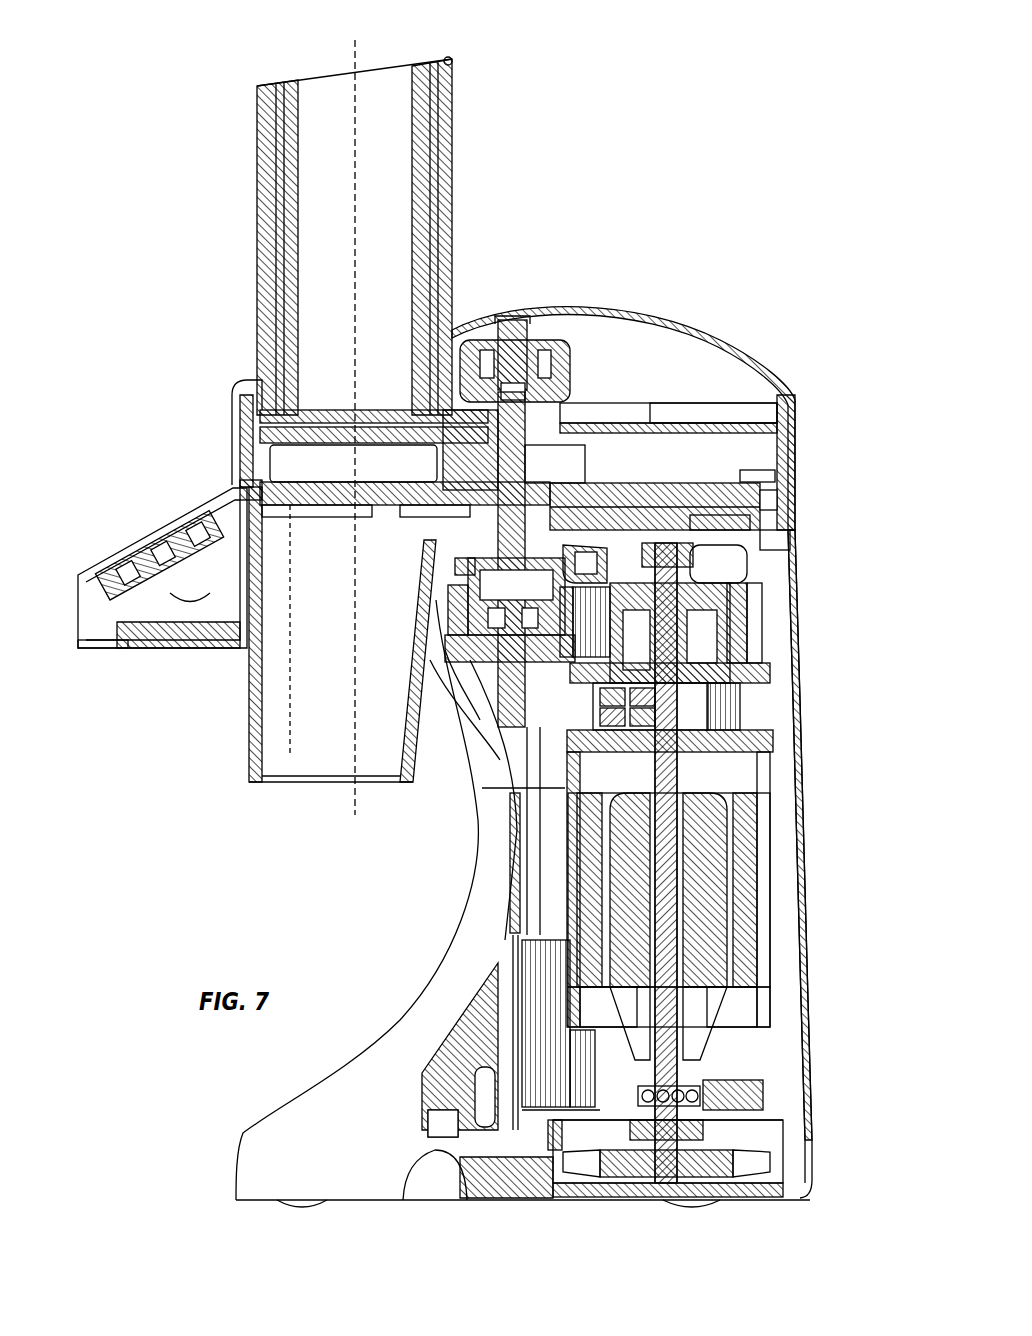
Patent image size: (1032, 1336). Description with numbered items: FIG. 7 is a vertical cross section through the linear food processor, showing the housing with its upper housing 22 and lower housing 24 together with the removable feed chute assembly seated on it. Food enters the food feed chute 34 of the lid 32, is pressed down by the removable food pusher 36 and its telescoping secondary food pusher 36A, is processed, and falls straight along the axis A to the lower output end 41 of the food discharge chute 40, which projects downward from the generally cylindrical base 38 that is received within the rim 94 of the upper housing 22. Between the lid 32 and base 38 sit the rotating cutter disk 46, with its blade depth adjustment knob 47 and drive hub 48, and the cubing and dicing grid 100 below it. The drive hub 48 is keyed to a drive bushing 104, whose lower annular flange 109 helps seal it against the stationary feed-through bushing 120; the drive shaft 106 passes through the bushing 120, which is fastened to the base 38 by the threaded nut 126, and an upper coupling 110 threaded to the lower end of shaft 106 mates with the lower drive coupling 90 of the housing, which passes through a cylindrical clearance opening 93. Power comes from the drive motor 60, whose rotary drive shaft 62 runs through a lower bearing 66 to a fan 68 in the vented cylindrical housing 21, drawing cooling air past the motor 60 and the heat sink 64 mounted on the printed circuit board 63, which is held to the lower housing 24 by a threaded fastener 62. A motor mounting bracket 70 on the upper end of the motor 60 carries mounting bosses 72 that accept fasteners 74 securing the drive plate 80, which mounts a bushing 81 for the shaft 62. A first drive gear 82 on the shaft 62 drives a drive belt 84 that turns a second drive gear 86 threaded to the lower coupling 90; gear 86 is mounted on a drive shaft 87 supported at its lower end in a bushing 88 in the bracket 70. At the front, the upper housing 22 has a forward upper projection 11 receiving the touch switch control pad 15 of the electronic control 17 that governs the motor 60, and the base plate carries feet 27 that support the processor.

The axis A is at (358, 52).
The forward upper projection 11 is at (95, 585).
The touch switch control pad 15 is at (135, 560).
The electronic control 17 is at (100, 645).
The vented cylindrical housing 21 is at (765, 1140).
The upper housing 22 is at (802, 648).
The lower housing 24 is at (812, 935).
The feet 27 is at (305, 1208).
The lid 32 is at (655, 340).
The food feed chute 34 is at (452, 216).
The removable food pusher 36 is at (449, 59).
The telescoping secondary food pusher 36A is at (297, 110).
The base 38 is at (240, 470).
The food discharge chute 40 is at (248, 690).
The lower output end 41 is at (270, 782).
The cutter disk 46 is at (640, 403).
The blade depth adjustment knob 47 is at (568, 375).
The drive hub 48 is at (530, 336).
The drive motor 60 is at (715, 900).
The drive shaft 62 is at (760, 795).
The printed circuit board 63 is at (500, 1068).
The heat sink 64 is at (535, 980).
The lower bearing 66 is at (740, 1090).
The fan 68 is at (740, 1120).
The motor mounting bracket 70 is at (770, 626).
The mounting bosses 72 is at (760, 585).
The fasteners 74 is at (790, 522).
The drive plate 80 is at (765, 475).
The bushing 81 is at (705, 520).
The first drive gear 82 is at (760, 548).
The drive belt 84 is at (770, 600).
The second drive gear 86 is at (467, 653).
The drive shaft 87 is at (512, 788).
The bushing 88 is at (493, 727).
The lower drive coupling 90 is at (450, 602).
The cylindrical clearance opening 93 is at (600, 582).
The rim 94 is at (775, 505).
The cubing and dicing grid 100 is at (300, 510).
The drive bushing 104 is at (535, 420).
The drive shaft 106 is at (709, 412).
The annular flange 109 is at (545, 500).
The upper coupling 110 is at (465, 562).
The feed-through bushing 120 is at (598, 506).
The threaded nut 126 is at (430, 482).